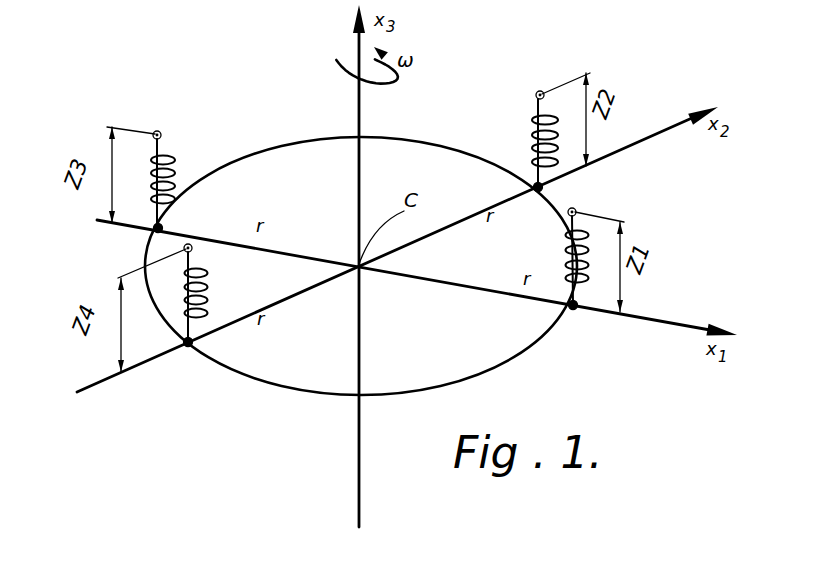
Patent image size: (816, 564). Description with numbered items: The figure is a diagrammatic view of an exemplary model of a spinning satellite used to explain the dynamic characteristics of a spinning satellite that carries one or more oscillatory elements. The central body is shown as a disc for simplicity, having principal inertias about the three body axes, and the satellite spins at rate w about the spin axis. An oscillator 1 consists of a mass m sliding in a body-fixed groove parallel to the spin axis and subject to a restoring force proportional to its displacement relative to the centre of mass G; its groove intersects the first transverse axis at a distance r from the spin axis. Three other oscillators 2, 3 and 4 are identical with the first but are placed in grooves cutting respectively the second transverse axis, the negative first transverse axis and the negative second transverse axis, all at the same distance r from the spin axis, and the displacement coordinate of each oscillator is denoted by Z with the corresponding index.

The oscillator 1 is at (582, 200).
The oscillator 2 is at (545, 80).
The oscillator 3 is at (158, 131).
The oscillator 4 is at (193, 249).